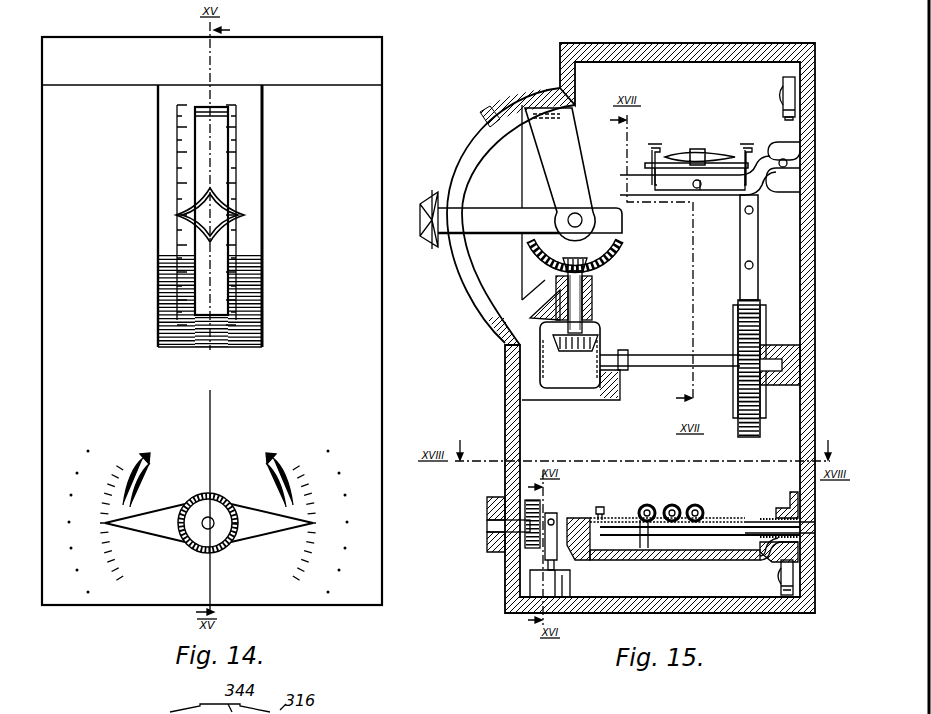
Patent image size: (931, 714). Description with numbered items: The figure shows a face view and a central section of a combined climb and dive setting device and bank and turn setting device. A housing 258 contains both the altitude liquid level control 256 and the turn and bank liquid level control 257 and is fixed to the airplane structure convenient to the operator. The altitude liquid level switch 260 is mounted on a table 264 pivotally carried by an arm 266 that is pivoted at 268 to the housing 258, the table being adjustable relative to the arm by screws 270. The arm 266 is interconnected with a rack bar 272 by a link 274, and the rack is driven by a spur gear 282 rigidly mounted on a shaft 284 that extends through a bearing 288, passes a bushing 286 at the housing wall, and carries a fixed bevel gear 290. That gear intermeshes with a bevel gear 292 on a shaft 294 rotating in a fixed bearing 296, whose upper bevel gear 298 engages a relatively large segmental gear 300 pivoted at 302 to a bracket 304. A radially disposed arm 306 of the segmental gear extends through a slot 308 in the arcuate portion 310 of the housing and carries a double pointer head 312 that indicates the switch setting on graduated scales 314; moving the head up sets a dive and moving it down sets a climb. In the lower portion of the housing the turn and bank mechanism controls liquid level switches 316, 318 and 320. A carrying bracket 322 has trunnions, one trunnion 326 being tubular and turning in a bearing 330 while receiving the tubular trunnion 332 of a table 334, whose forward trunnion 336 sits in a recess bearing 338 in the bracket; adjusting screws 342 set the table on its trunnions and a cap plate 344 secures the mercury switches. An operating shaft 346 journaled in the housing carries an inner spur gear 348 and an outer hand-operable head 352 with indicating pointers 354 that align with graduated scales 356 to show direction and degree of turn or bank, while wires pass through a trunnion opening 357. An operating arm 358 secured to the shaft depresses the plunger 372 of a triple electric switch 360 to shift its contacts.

In FIG. 14, the altitude liquid level control 256 is at (292, 180).
In FIG. 15, the altitude liquid level control 256 is at (646, 246).
In FIG. 14, the turn and bank liquid level control 257 is at (208, 498).
In FIG. 15, the turn and bank liquid level control 257 is at (765, 495).
In FIG. 14, the housing 258 is at (405, 70).
In FIG. 15, the housing 258 is at (690, 44).
In FIG. 15, the altitude liquid level switch 260 is at (708, 152).
In FIG. 15, the table 264 is at (700, 180).
In FIG. 15, the arm 266 is at (745, 212).
In FIG. 15, the pivot 268 is at (788, 165).
In FIG. 15, the screws 270 is at (706, 155).
In FIG. 15, the rack bar 272 is at (742, 290).
In FIG. 15, the link 274 is at (742, 250).
In FIG. 15, the spur gear 282 is at (738, 336).
In FIG. 15, the shaft 284 is at (656, 369).
In FIG. 15, the bushing 286 is at (788, 350).
In FIG. 15, the bearing 288 is at (623, 357).
In FIG. 15, the bevel gear 290 is at (571, 361).
In FIG. 15, the bevel gear 292 is at (590, 336).
In FIG. 15, the shaft 294 is at (588, 284).
In FIG. 15, the fixed bearing 296 is at (591, 300).
In FIG. 15, the bevel gear 298 is at (566, 270).
In FIG. 15, the segmental gear 300 is at (540, 247).
In FIG. 15, the pivot 302 is at (582, 215).
In FIG. 15, the bracket 304 is at (568, 150).
In FIG. 15, the arm 306 is at (486, 212).
In FIG. 14, the slot 308 is at (226, 134).
In FIG. 15, the slot 308 is at (482, 128).
In FIG. 14, the arcuate portion 310 is at (263, 237).
In FIG. 15, the arcuate portion 310 is at (472, 298).
In FIG. 14, the double pointer head 312 is at (248, 214).
In FIG. 15, the double pointer head 312 is at (434, 229).
In FIG. 14, the graduated scales 314 is at (250, 262).
In FIG. 15, the liquid level switch 316 is at (648, 504).
In FIG. 15, the liquid level switch 318 is at (692, 505).
In FIG. 15, the liquid level switch 320 is at (698, 505).
In FIG. 15, the carrying bracket 322 is at (590, 565).
In FIG. 15, the trunnion 326 is at (805, 510).
In FIG. 15, the bearing 330 is at (805, 552).
In FIG. 15, the tubular trunnion 332 is at (812, 528).
In FIG. 15, the table 334 is at (682, 545).
In FIG. 15, the forward trunnion 336 is at (610, 506).
In FIG. 15, the recess bearing 338 is at (578, 518).
In FIG. 15, the adjusting screws 342 is at (622, 508).
In FIG. 15, the cap plate 344 is at (618, 520).
In FIG. 15, the operating shaft 346 is at (488, 526).
In FIG. 15, the spur gear 348 is at (525, 545).
In FIG. 14, the hand-operable head 352 is at (196, 548).
In FIG. 14, the indicating pointers 354 is at (146, 531).
In FIG. 14, the graduated scales 356 is at (312, 462).
In FIG. 15, the trunnion opening 357 is at (718, 562).
In FIG. 15, the operating arm 358 is at (545, 548).
In FIG. 15, the triple electric switch 360 is at (535, 592).
In FIG. 15, the plunger 372 is at (598, 606).